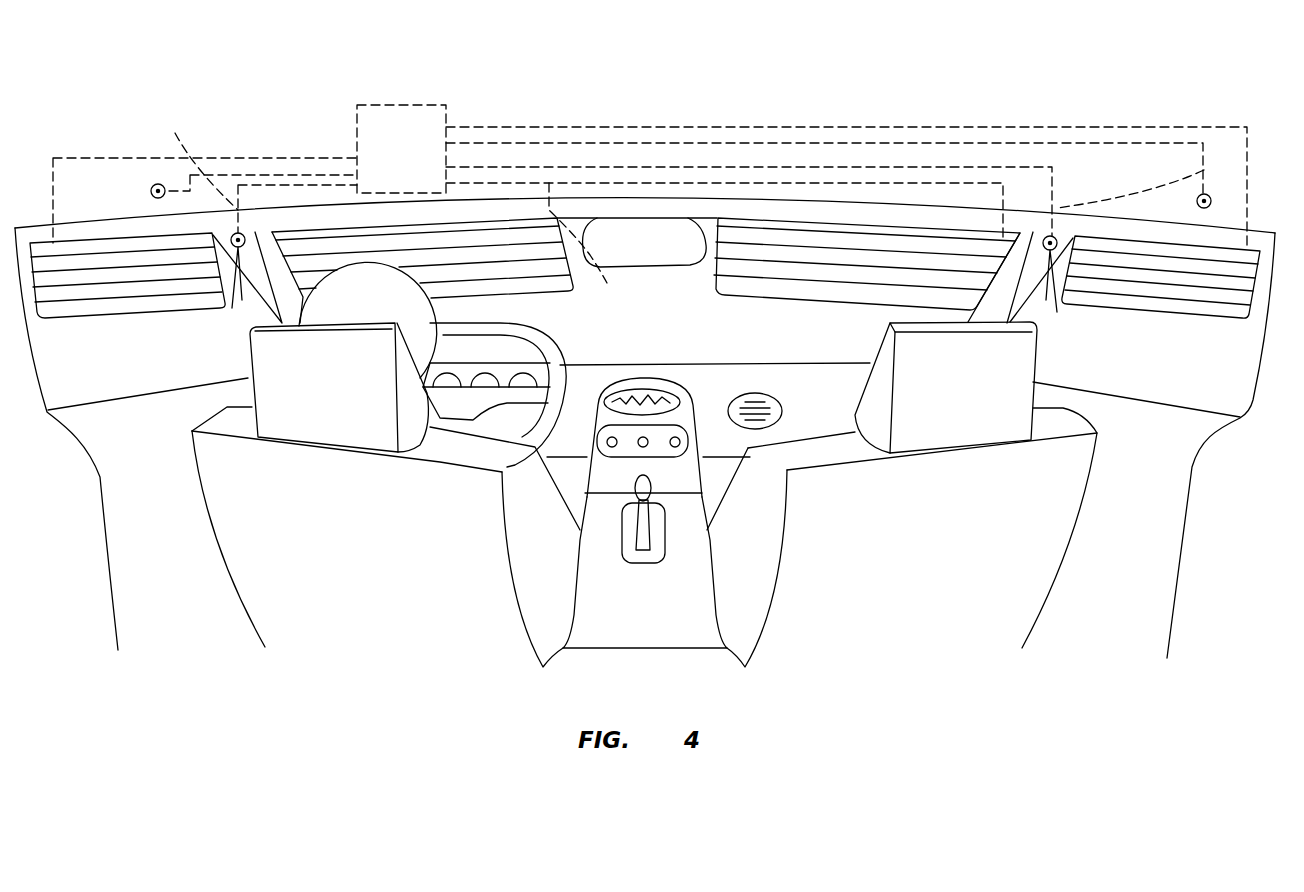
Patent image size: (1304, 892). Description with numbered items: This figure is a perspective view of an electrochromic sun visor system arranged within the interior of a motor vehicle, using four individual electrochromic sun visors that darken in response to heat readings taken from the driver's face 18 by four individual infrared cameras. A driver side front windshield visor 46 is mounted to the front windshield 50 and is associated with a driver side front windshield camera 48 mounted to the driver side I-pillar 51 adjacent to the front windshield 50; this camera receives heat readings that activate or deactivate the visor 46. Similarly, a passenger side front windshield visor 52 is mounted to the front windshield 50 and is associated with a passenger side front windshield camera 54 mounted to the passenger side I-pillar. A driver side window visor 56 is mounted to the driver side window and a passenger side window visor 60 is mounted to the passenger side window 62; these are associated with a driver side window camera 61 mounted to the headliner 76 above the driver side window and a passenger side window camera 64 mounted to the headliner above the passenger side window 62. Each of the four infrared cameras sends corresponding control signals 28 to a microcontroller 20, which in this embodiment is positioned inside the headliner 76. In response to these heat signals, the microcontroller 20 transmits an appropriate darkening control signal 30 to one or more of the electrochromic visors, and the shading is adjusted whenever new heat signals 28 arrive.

The driver's face 18 is at (441, 309).
The microcontroller 20 is at (420, 114).
The control signals 28 is at (682, 158).
The darkening control signal 30 is at (240, 158).
The driver side front windshield visor 46 is at (540, 295).
The driver side front windshield camera 48 is at (232, 285).
The front windshield 50 is at (837, 355).
The driver side I-pillar 51 is at (983, 318).
The passenger side front windshield visor 52 is at (731, 303).
The passenger side front windshield camera 54 is at (1054, 287).
The driver side window visor 56 is at (156, 323).
The passenger side window visor 60 is at (1150, 323).
The driver side window camera 61 is at (151, 191).
The passenger side window 62 is at (1210, 397).
The passenger side window camera 64 is at (1211, 200).
The headliner 76 is at (717, 210).